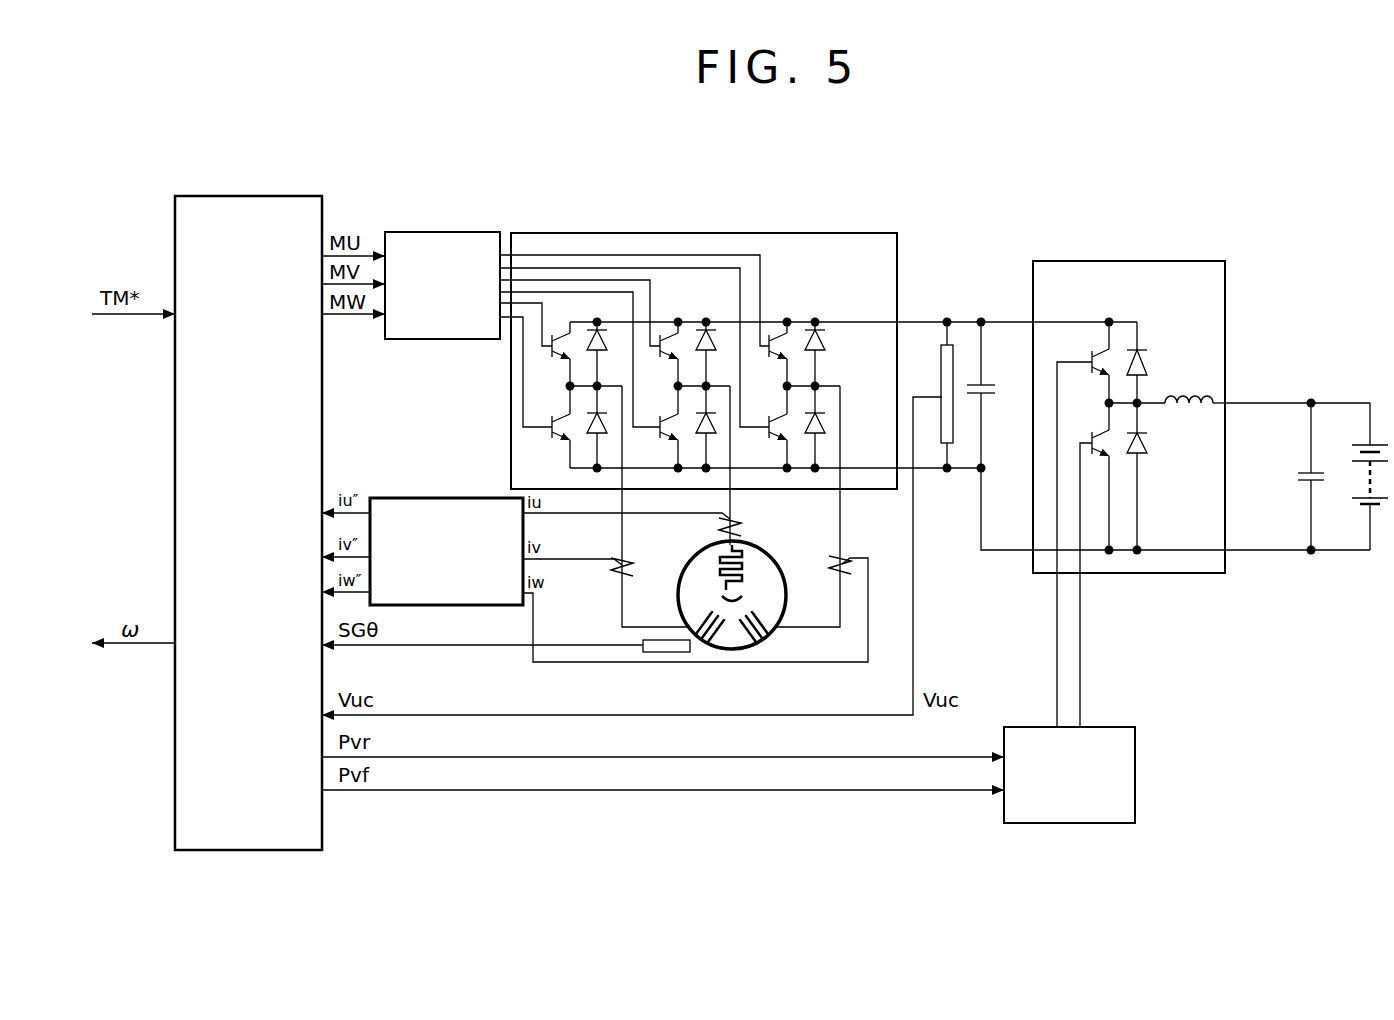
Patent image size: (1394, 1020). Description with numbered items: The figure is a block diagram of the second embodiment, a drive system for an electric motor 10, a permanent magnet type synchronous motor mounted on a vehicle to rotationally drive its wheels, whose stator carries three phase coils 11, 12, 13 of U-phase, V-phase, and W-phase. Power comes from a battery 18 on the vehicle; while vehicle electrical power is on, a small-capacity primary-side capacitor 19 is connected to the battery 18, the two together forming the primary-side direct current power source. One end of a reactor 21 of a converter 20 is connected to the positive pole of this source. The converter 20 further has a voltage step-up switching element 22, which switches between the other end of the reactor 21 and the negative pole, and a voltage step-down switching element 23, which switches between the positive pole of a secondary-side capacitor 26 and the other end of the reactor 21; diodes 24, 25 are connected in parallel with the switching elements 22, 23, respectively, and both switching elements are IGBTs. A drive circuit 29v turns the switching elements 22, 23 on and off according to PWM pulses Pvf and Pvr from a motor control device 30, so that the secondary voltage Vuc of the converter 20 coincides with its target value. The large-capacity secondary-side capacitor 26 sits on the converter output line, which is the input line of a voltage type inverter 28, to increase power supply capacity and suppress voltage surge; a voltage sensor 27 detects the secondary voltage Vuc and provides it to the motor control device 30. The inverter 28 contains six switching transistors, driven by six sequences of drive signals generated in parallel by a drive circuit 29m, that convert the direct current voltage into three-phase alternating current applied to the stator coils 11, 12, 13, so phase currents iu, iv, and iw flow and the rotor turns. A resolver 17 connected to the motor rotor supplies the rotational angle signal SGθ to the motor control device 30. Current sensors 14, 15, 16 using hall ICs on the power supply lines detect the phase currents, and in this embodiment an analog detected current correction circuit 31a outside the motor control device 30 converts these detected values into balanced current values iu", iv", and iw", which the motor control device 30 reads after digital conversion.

The electric motor 10 is at (749, 581).
The U-phase stator coil 11 is at (720, 619).
The V-phase stator coil 12 is at (724, 568).
The W-phase stator coil 13 is at (758, 598).
The current sensor 14 is at (612, 566).
The current sensor 15 is at (720, 524).
The current sensor 16 is at (847, 557).
The resolver 17 is at (643, 641).
The battery 18 is at (1360, 441).
The primary-side capacitor 19 is at (1303, 474).
The converter 20 is at (1129, 417).
The reactor 21 is at (1192, 392).
The voltage step-up switching element 22 is at (1093, 430).
The voltage step-down switching element 23 is at (1088, 354).
The diode 24 is at (1148, 448).
The diode 25 is at (1147, 360).
The secondary-side capacitor 26 is at (988, 386).
The voltage sensor 27 is at (940, 379).
The voltage type inverter 28 is at (833, 232).
The drive circuit 29m is at (428, 232).
The drive circuit 29v is at (1138, 758).
The motor control device 30 is at (175, 534).
The detected current correction circuit 31a is at (403, 496).